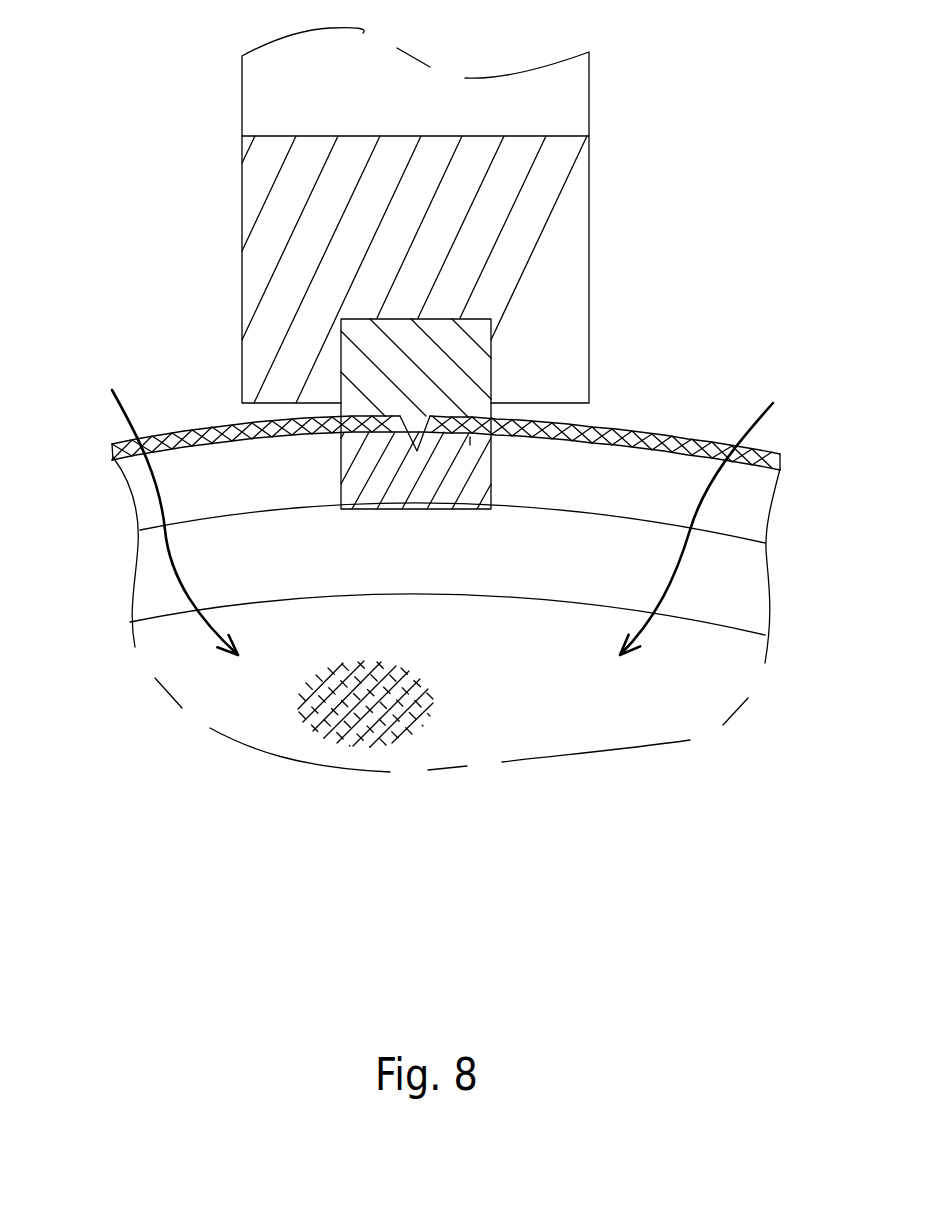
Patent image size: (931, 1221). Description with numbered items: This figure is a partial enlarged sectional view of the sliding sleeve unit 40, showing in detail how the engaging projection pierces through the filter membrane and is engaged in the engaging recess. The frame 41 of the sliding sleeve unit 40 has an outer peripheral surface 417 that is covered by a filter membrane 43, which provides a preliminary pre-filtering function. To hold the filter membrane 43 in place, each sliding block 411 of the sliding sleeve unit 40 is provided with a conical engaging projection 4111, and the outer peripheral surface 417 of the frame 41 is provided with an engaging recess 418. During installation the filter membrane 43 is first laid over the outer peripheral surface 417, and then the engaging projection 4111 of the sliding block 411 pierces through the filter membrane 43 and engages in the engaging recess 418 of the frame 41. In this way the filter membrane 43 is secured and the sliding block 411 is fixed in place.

The sliding sleeve unit 40 is at (156, 411).
The frame 41 is at (411, 426).
The sliding block 411 is at (373, 383).
The engaging projection 4111 is at (417, 435).
The outer peripheral surface 417 is at (470, 437).
The engaging recess 418 is at (416, 452).
The filter membrane 43 is at (700, 436).